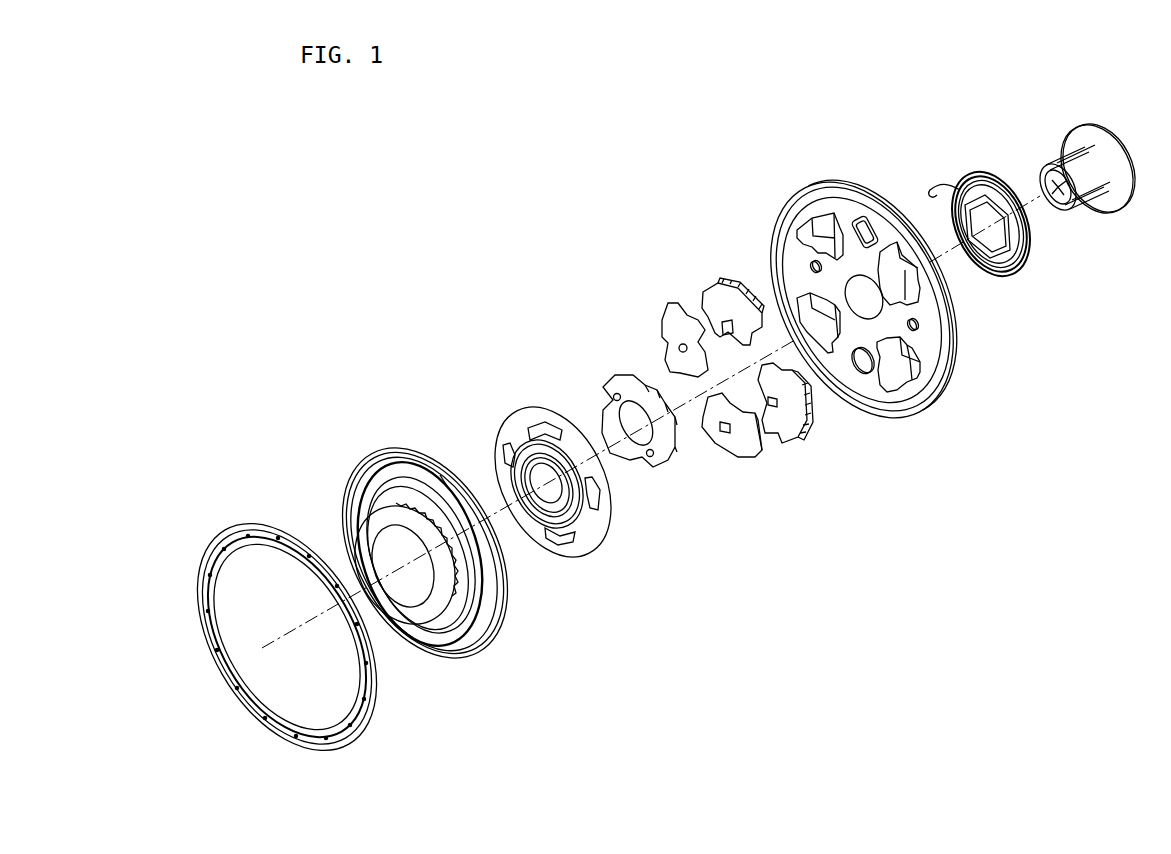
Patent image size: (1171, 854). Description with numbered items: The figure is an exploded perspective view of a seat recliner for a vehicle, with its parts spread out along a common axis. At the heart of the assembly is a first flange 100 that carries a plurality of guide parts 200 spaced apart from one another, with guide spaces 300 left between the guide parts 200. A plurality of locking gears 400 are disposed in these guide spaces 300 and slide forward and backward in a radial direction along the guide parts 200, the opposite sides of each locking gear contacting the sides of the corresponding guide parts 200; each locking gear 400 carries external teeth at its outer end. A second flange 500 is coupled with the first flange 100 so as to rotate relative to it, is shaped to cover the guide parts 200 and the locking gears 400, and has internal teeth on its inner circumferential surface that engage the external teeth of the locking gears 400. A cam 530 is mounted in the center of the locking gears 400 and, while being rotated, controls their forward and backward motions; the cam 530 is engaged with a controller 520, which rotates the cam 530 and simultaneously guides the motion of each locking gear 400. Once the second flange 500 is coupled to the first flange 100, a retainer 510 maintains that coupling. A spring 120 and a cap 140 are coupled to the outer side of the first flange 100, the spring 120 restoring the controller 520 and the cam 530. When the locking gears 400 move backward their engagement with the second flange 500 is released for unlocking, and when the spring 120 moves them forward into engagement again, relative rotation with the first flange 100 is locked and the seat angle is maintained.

The first flange 100 is at (893, 402).
The spring 120 is at (1008, 280).
The cap 140 is at (1112, 202).
The guide parts 200 is at (803, 233).
The guide spaces 300 is at (918, 348).
The locking gears 400 is at (670, 322).
The second flange 500 is at (365, 467).
The retainer 510 is at (227, 537).
The controller 520 is at (517, 428).
The cam 530 is at (622, 385).